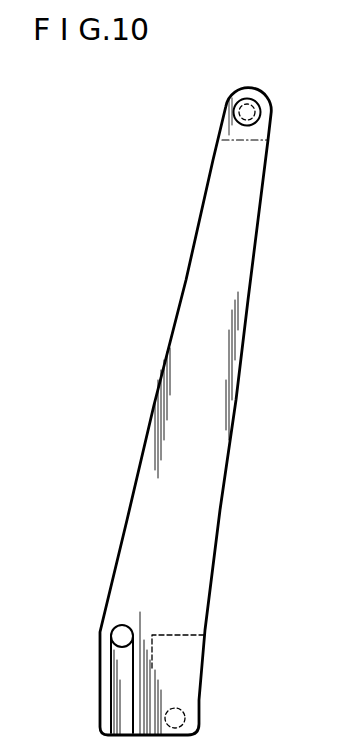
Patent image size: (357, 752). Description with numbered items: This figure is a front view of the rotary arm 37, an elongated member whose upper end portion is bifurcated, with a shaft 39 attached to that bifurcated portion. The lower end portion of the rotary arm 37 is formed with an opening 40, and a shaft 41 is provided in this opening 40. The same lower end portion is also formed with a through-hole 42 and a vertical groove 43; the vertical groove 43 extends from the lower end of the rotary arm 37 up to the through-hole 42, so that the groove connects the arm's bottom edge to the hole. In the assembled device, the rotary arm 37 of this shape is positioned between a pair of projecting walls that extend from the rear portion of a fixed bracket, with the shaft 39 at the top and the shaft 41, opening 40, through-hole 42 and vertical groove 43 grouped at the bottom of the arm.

The rotary arm 37 is at (140, 276).
The shaft 39 is at (260, 99).
The opening 40 is at (190, 650).
The shaft 41 is at (186, 716).
The through-hole 42 is at (104, 633).
The vertical groove 43 is at (108, 688).